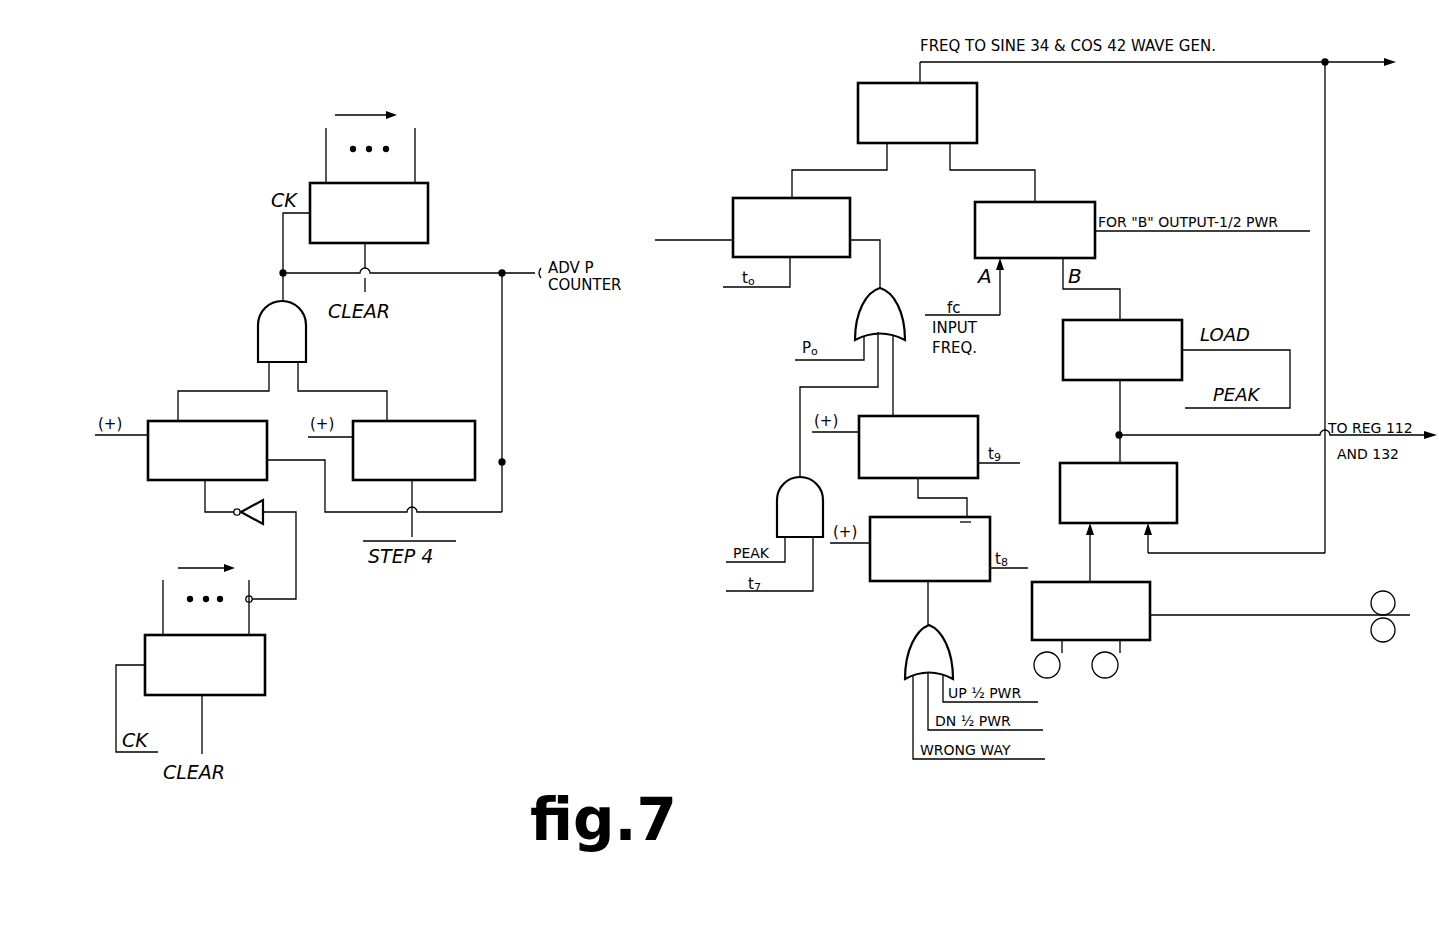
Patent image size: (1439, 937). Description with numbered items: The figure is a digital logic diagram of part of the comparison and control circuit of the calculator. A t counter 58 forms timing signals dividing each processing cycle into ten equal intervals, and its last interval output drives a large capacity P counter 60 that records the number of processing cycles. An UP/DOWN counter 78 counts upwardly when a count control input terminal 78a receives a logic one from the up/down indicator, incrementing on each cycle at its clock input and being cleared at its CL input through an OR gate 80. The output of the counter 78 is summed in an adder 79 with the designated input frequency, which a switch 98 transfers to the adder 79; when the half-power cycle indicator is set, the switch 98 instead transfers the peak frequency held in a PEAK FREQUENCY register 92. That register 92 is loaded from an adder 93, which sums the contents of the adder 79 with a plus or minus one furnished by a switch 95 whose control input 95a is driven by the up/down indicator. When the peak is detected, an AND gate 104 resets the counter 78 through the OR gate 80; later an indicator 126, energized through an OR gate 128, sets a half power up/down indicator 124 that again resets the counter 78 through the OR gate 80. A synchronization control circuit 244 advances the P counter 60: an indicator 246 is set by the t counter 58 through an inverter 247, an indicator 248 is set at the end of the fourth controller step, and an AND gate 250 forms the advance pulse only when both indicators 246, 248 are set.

The t counter 58 is at (243, 695).
The P counter 60 is at (428, 222).
The UP/DOWN counter 78 is at (758, 198).
The count control input terminal 78a is at (733, 248).
The adder 79 is at (977, 115).
The OR gate 80 is at (898, 296).
The PEAK FREQUENCY register 92 is at (1148, 320).
The adder 93 is at (1177, 495).
The switch 95 is at (1150, 640).
The control input 95a is at (1150, 612).
The switch 98 is at (1070, 201).
The AND gate 104 is at (778, 484).
The ½ POWER UP/DOWN indicator 124 is at (935, 416).
The indicator 126 is at (975, 517).
The OR gate 128 is at (906, 648).
The synchronization control circuit 244 is at (372, 604).
The indicator 246 is at (168, 480).
The inverter 247 is at (251, 521).
The indicator 248 is at (413, 421).
The AND gate 250 is at (306, 340).